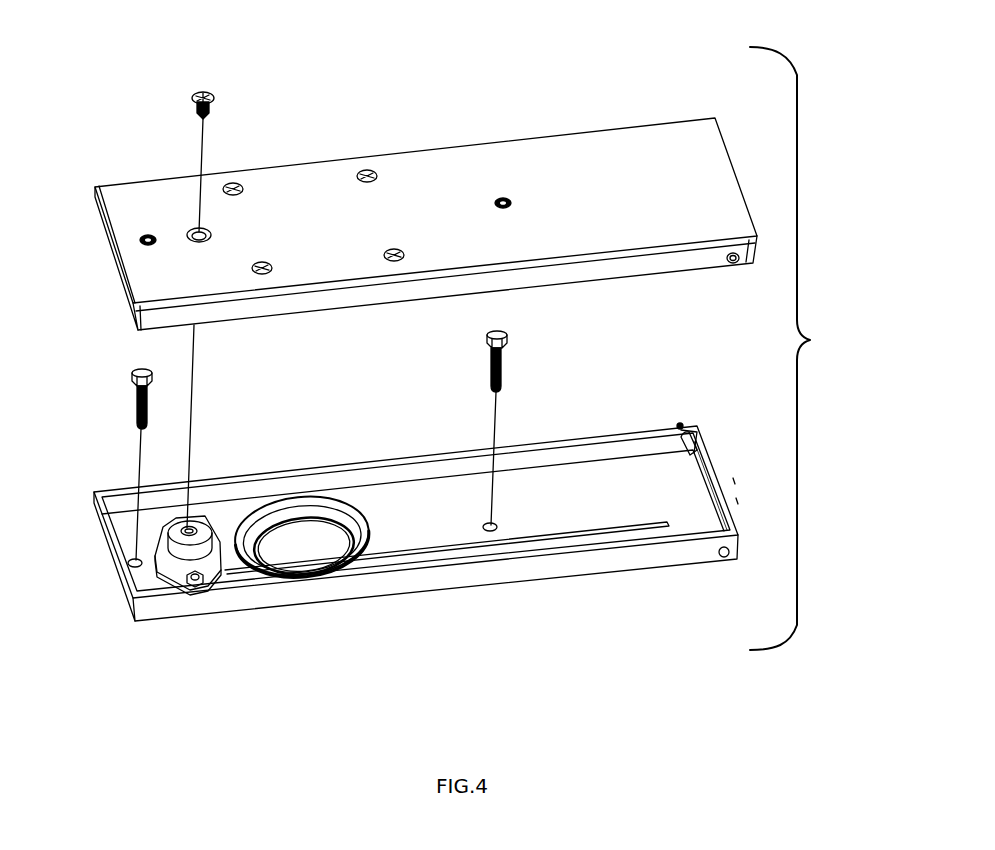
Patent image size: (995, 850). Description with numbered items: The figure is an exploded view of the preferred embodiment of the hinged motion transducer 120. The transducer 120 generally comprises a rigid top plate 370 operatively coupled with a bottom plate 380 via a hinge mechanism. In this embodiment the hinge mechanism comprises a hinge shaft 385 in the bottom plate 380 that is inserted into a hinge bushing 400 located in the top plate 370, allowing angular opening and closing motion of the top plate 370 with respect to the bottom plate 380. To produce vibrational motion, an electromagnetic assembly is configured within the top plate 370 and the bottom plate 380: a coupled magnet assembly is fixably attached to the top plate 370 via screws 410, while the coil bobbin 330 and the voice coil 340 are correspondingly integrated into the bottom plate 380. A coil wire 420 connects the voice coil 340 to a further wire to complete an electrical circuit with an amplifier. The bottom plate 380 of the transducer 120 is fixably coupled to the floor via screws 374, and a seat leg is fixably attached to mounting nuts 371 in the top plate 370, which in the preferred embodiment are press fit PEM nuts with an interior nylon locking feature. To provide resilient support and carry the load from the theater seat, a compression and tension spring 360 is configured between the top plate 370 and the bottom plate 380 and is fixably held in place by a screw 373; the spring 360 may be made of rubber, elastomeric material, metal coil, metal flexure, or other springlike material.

The transducer 120 is at (804, 348).
The top plate 370 is at (630, 148).
The mounting nuts 371 is at (148, 234).
The screw 373 is at (205, 92).
The screws 374 is at (137, 404).
The bottom plate 380 is at (506, 577).
The hinge shaft 385 is at (668, 428).
The hinge bushing 400 is at (730, 263).
The screws 410 is at (392, 252).
The coil wire 420 is at (650, 524).
The coil bobbin 330 is at (251, 540).
The voice coil 340 is at (367, 565).
The compression and tension spring 360 is at (178, 557).